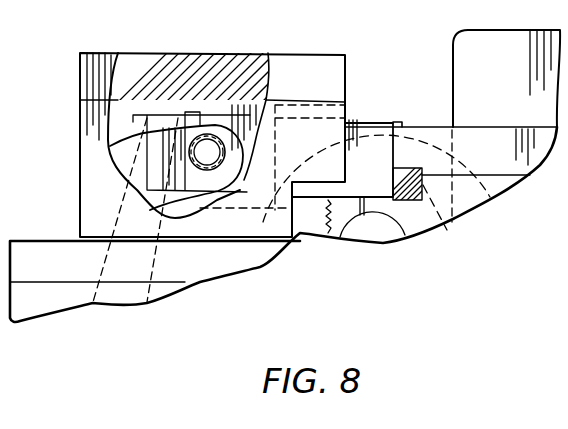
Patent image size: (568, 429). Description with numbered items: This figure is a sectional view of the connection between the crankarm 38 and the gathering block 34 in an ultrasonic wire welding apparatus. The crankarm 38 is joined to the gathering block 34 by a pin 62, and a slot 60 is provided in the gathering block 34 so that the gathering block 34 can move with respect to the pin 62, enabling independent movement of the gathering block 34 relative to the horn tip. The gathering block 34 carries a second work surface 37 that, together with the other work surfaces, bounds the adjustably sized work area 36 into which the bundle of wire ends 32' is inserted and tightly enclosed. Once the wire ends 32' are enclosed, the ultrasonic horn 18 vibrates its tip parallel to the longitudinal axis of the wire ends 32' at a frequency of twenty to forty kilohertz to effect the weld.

The ultrasonic horn 18 is at (372, 233).
The bundle of wire ends 32' is at (376, 158).
The gathering block 34 is at (362, 127).
The work area 36 is at (393, 186).
The second work surface 37 is at (400, 126).
The crankarm 38 is at (112, 201).
The slot 60 is at (199, 117).
The pin 62 is at (207, 148).